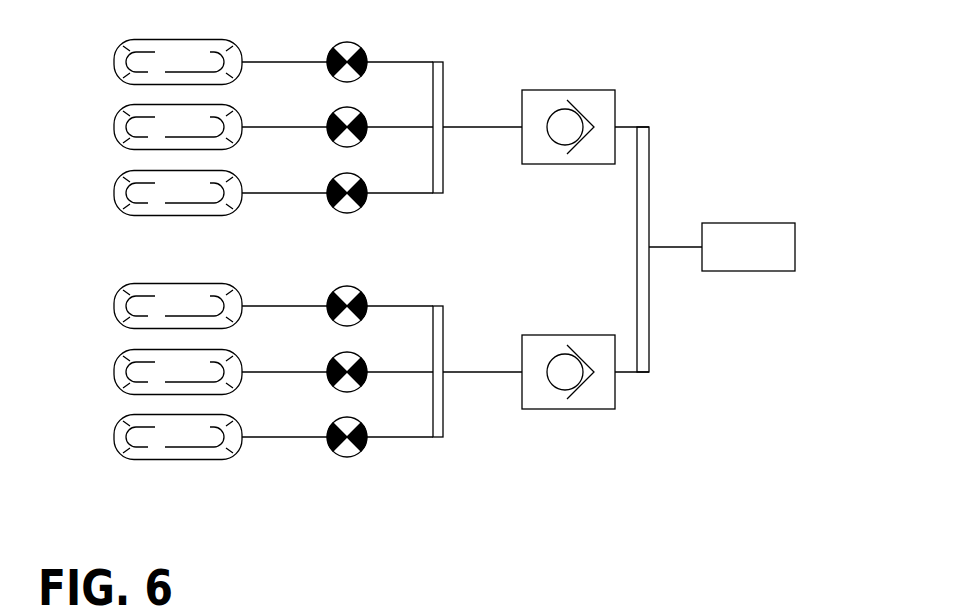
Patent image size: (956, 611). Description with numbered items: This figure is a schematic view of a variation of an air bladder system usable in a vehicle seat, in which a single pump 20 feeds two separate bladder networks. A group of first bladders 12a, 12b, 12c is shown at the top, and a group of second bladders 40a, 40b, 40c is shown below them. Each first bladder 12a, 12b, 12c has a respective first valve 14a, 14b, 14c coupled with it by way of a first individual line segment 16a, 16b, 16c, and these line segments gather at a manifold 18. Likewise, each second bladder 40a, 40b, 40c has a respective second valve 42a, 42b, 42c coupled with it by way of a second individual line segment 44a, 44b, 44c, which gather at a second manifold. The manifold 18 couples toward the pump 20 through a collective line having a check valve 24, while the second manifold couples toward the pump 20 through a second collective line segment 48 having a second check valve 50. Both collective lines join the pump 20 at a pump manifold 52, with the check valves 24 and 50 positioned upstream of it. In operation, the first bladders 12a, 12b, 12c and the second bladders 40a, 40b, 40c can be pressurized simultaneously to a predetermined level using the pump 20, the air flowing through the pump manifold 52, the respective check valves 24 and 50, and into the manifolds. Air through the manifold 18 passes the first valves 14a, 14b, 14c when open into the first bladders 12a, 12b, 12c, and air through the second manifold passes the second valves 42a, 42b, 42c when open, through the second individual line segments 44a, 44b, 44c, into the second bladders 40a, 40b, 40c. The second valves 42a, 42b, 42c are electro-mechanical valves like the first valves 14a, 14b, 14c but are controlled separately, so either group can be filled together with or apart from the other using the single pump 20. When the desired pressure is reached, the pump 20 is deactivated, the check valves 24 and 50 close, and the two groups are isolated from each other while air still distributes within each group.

The first bladder 12a is at (114, 62).
The first bladder 12b is at (114, 127).
The first bladder 12c is at (114, 193).
The first valve 14a is at (365, 52).
The first valve 14b is at (365, 117).
The first valve 14c is at (365, 183).
The first individual line segment 16a is at (272, 60).
The first individual line segment 16b is at (272, 125).
The first individual line segment 16c is at (272, 191).
The manifold 18 is at (445, 82).
The pump 20 is at (748, 223).
The check valve 24 is at (566, 90).
The second bladder 40a is at (114, 306).
The second bladder 40b is at (114, 372).
The second bladder 40c is at (114, 437).
The second valve 42a is at (365, 296).
The second valve 42b is at (365, 362).
The second valve 42c is at (365, 427).
The second individual line segment 44a is at (272, 304).
The second individual line segment 44b is at (272, 370).
The second individual line segment 44c is at (272, 435).
The second collective line segment 48 is at (445, 323).
The second check valve 50 is at (468, 374).
The pump manifold 52 is at (649, 162).